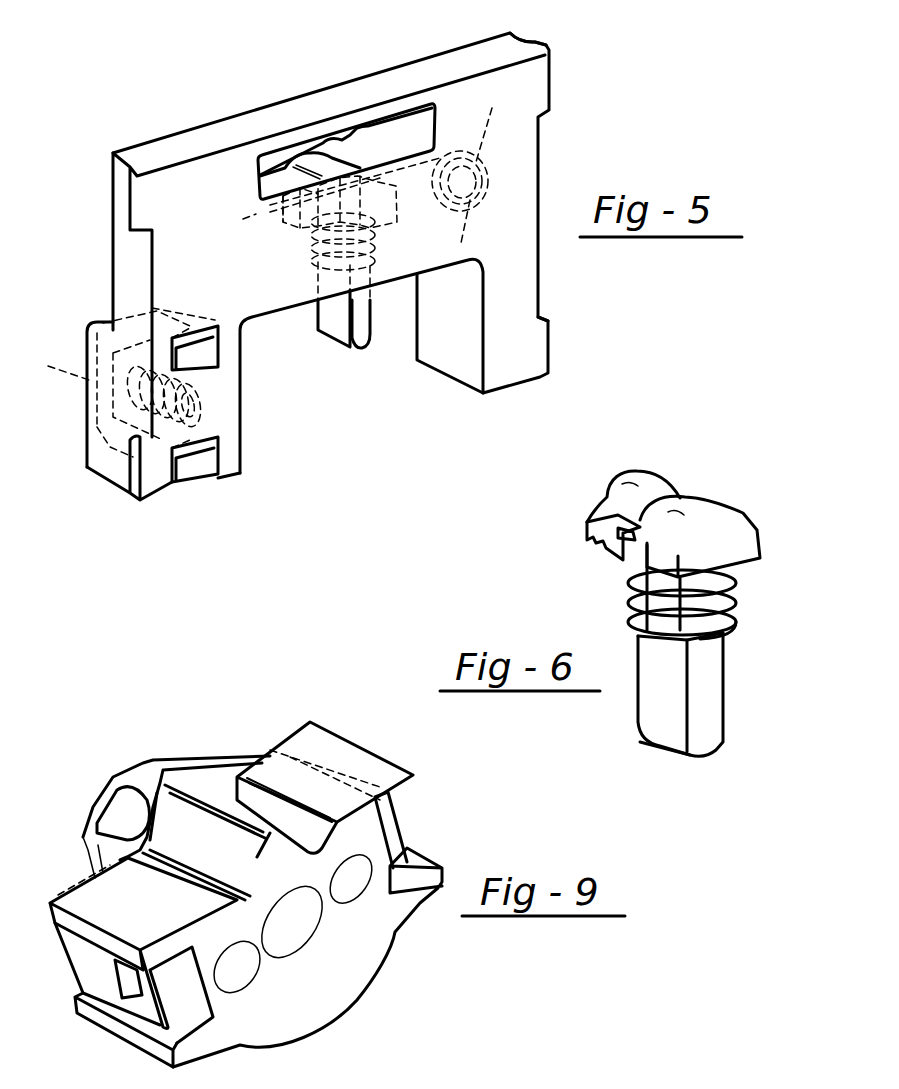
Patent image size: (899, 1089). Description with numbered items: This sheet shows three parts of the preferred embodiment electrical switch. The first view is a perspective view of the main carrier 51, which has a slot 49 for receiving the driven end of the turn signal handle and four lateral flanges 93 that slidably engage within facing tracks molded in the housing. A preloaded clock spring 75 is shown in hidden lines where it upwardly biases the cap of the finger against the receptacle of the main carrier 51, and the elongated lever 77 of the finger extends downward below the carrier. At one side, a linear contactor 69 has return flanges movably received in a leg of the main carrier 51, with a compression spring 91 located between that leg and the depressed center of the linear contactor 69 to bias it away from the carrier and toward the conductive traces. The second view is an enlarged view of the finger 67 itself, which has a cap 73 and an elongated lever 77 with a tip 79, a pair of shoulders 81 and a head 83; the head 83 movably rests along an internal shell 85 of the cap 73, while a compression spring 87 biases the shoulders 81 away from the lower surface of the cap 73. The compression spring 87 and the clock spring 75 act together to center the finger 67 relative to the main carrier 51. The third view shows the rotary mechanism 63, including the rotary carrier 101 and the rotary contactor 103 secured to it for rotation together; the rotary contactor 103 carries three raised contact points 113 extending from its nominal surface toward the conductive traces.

In FIG. 5, the slot 49 is at (388, 147).
In FIG. 5, the main carrier 51 is at (177, 208).
In FIG. 5, the linear contactor 69 is at (205, 356).
In FIG. 5, the clock spring 75 is at (469, 162).
In FIG. 5, the elongated lever 77 is at (362, 317).
In FIG. 6, the elongated lever 77 is at (708, 712).
In FIG. 5, the compression spring 91 is at (111, 385).
In FIG. 5, the lateral flanges 93 is at (547, 77).
In FIG. 6, the finger 67 is at (699, 604).
In FIG. 6, the cap 73 is at (630, 484).
In FIG. 6, the head 83 is at (672, 513).
In FIG. 6, the internal shell 85 is at (617, 511).
In FIG. 6, the compression spring 87 is at (627, 603).
In FIG. 6, the shoulders 81 is at (717, 643).
In FIG. 6, the tip 79 is at (663, 746).
In FIG. 9, the rotary mechanism 63 is at (229, 887).
In FIG. 9, the raised contact points 113 is at (100, 800).
In FIG. 9, the rotary contactor 103 is at (222, 777).
In FIG. 9, the rotary carrier 101 is at (250, 1020).